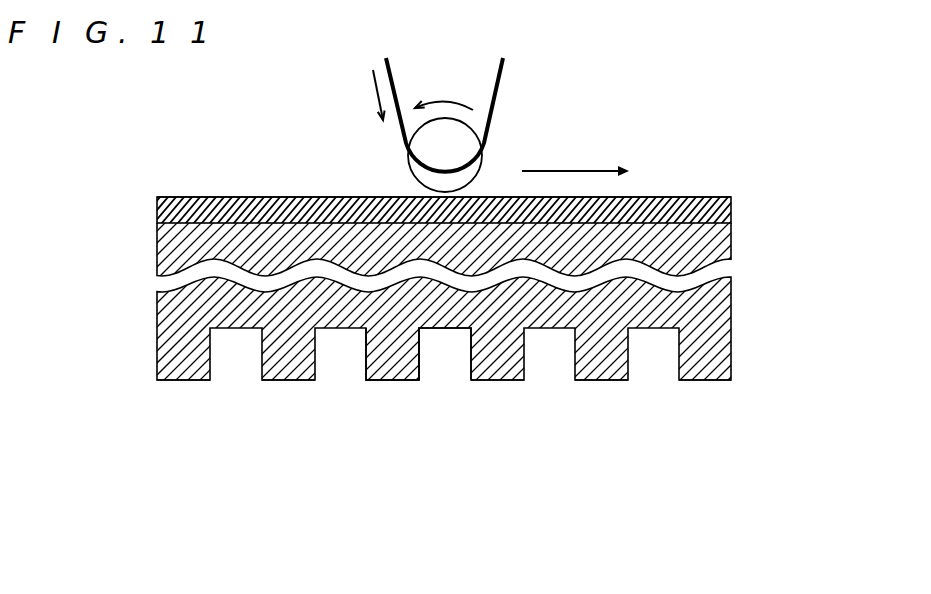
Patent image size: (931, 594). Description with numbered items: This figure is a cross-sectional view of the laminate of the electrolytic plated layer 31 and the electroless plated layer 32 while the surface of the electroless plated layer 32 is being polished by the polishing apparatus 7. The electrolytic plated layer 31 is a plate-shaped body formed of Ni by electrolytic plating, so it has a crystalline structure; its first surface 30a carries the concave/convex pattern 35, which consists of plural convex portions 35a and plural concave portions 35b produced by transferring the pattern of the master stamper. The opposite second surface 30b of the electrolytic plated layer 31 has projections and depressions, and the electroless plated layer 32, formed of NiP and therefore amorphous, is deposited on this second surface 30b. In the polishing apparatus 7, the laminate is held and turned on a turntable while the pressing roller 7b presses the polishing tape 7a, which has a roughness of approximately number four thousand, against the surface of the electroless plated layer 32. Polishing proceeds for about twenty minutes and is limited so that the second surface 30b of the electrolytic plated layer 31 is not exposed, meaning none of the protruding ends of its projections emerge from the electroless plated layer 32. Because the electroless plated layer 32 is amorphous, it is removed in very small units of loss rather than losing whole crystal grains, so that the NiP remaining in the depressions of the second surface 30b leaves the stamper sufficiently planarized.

The polishing apparatus 7 is at (454, 125).
The polishing tape 7a is at (493, 118).
The pressing roller 7b is at (427, 160).
The first surface 30a is at (187, 383).
The second surface 30b is at (183, 222).
The electrolytic plated layer 31 is at (731, 286).
The electroless plated layer 32 is at (731, 200).
The concave/convex pattern 35 is at (444, 400).
The convex portions 35a is at (396, 362).
The concave portions 35b is at (445, 352).